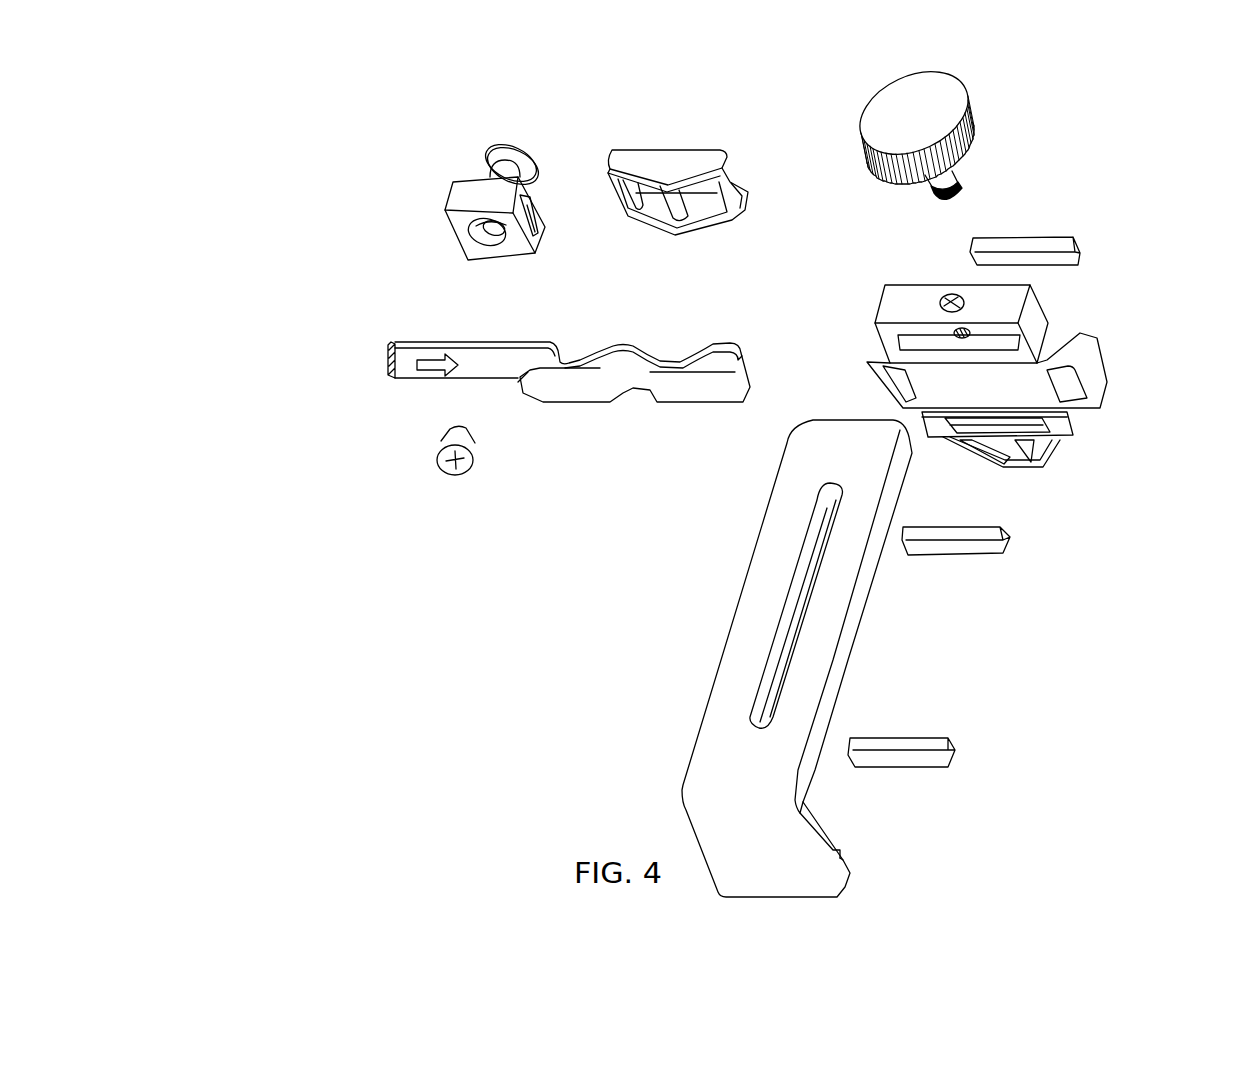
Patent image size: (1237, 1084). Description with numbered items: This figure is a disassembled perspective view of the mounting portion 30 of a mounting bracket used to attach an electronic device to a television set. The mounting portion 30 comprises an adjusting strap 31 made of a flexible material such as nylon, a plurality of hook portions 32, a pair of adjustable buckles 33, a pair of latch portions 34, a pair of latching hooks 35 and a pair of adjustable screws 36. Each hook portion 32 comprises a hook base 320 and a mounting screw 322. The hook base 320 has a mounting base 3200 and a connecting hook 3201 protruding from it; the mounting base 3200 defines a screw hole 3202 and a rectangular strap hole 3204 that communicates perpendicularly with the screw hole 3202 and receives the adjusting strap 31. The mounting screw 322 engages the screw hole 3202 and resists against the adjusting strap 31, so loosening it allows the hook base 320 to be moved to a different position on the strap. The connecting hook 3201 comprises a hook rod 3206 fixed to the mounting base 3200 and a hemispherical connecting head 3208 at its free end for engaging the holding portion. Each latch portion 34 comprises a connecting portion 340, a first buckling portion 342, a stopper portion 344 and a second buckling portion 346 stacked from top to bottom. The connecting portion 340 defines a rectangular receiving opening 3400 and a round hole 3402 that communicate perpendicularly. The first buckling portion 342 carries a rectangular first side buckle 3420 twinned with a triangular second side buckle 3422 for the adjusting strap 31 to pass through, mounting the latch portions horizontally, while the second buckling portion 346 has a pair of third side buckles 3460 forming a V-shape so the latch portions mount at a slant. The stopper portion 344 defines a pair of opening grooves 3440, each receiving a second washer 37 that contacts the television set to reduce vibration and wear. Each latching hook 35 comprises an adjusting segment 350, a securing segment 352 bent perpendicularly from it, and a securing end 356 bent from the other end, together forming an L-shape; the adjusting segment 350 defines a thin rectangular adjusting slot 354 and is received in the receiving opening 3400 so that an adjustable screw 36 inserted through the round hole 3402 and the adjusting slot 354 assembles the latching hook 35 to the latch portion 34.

The mounting portion 30 is at (583, 112).
The adjusting strap 31 is at (697, 388).
The hook portion 32 is at (205, 228).
The hook base 320 is at (268, 192).
The connecting hook 3201 is at (341, 163).
The connecting head 3208 is at (497, 153).
The hook rod 3206 is at (500, 171).
The mounting base 3200 is at (348, 248).
The strap hole 3204 is at (490, 219).
The screw hole 3202 is at (503, 238).
The mounting screw 322 is at (432, 457).
The adjustable buckle 33 is at (663, 168).
The latch portion 34 is at (912, 259).
The connecting portion 340 is at (890, 330).
The receiving opening 3400 is at (985, 340).
The round hole 3402 is at (958, 302).
The first buckling portion 342 is at (1035, 378).
The first side buckle 3420 is at (1065, 375).
The second side buckle 3422 is at (896, 378).
The stopper portion 344 is at (937, 427).
The opening groove 3440 is at (1027, 430).
The second buckling portion 346 is at (1053, 450).
The third side buckle 3460 is at (1037, 452).
The latching hook 35 is at (502, 668).
The adjusting segment 350 is at (763, 580).
The securing segment 352 is at (817, 848).
The adjusting slot 354 is at (772, 672).
The securing end 356 is at (833, 860).
The adjustable screw 36 is at (905, 117).
The second washer 37 is at (1025, 243).